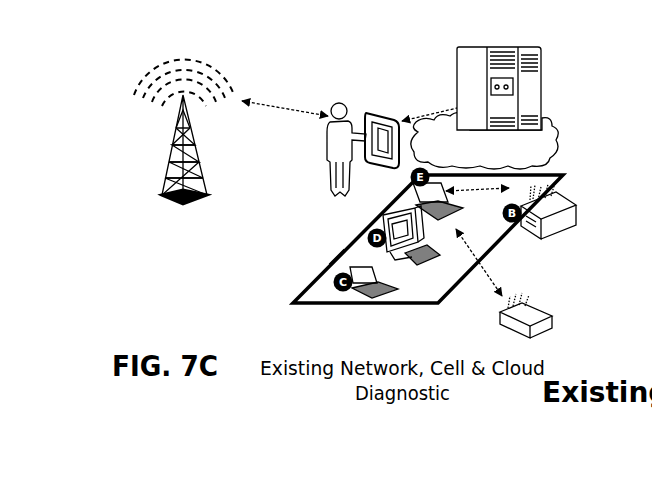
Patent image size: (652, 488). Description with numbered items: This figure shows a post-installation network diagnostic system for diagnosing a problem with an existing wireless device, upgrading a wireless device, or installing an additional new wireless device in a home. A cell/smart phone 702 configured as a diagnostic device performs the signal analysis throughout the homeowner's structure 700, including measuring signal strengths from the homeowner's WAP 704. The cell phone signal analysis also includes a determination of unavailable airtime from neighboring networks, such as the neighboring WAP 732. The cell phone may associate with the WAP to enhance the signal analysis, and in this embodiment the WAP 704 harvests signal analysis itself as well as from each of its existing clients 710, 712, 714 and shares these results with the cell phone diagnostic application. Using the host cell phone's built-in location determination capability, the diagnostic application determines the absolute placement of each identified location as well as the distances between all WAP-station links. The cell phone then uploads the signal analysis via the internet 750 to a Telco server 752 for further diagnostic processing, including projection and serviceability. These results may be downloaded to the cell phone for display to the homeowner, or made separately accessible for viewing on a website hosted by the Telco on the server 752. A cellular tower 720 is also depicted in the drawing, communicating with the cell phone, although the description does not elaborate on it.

The homeowner's structure 700 is at (383, 305).
The cell/smart phone 702 is at (383, 116).
The homeowner's WAP 704 is at (577, 228).
The existing client 710 is at (335, 262).
The existing client 712 is at (376, 226).
The existing client 714 is at (410, 187).
The cellular tower 720 is at (206, 196).
The neighboring WAP 732 is at (553, 331).
The internet 750 is at (559, 140).
The Telco server 752 is at (542, 96).